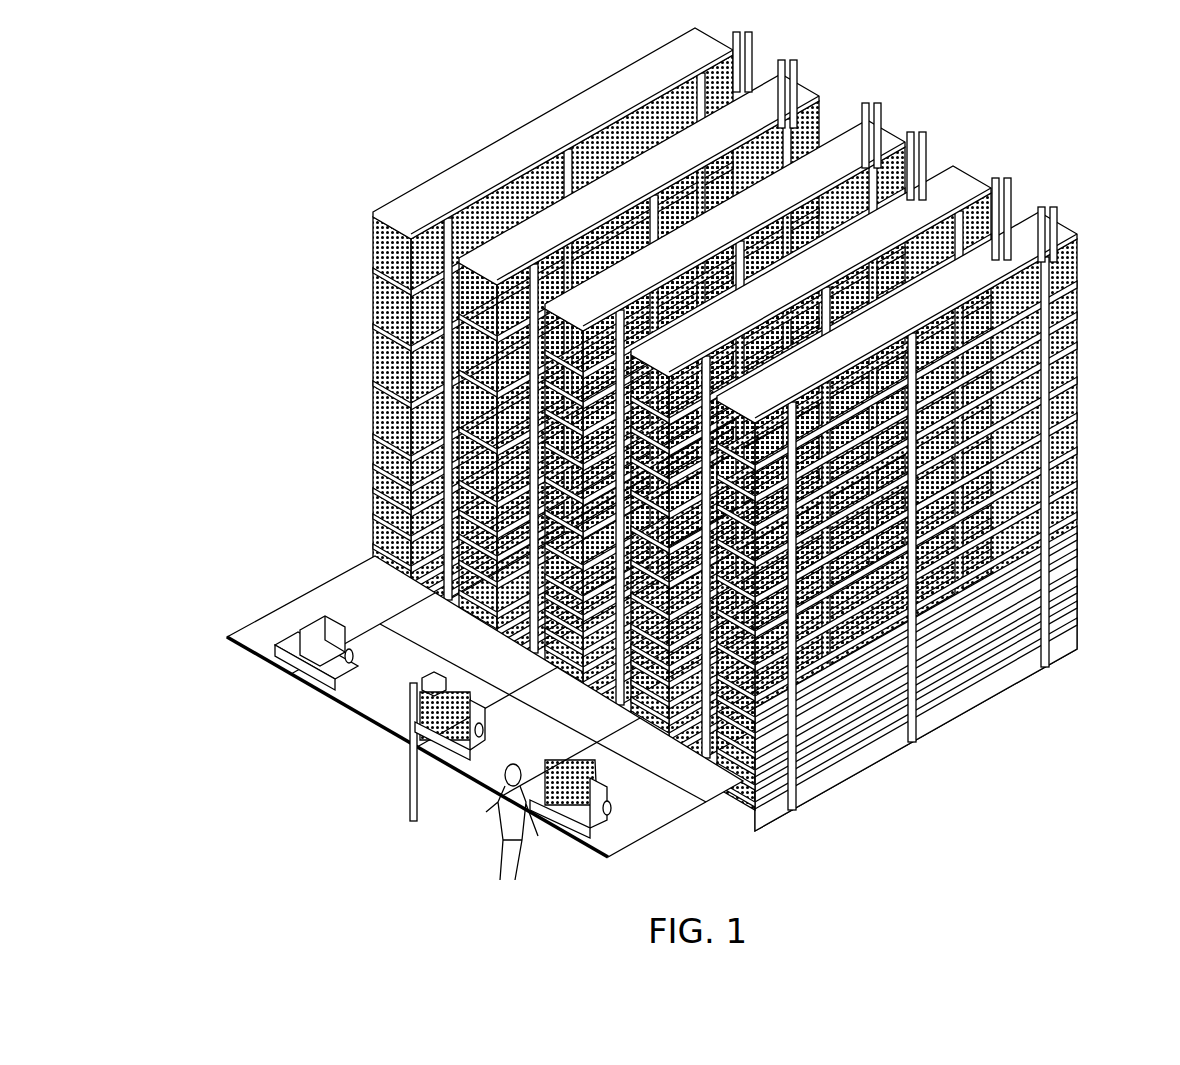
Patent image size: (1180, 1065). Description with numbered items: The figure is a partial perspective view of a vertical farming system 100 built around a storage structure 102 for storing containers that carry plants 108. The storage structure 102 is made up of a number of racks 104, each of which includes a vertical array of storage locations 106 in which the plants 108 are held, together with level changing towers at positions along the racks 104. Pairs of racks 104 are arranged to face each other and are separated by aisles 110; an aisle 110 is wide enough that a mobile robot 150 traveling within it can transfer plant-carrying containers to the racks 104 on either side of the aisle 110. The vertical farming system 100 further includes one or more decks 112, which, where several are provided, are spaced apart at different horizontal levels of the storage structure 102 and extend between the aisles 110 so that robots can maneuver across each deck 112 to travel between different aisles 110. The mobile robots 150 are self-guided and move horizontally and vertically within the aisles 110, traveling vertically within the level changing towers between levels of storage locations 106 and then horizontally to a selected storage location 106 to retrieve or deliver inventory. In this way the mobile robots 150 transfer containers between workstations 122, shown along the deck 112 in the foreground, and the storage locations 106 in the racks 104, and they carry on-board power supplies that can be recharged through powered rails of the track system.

The vertical farming system 100 is at (651, 429).
The storage structure 102 is at (522, 85).
The rack 104 is at (1076, 466).
The storage location 106 is at (1072, 541).
The plant 108 is at (1072, 333).
The aisle 110 is at (897, 125).
The deck 112 is at (378, 515).
The workstation 122 is at (284, 701).
The mobile robot 150 is at (300, 650).